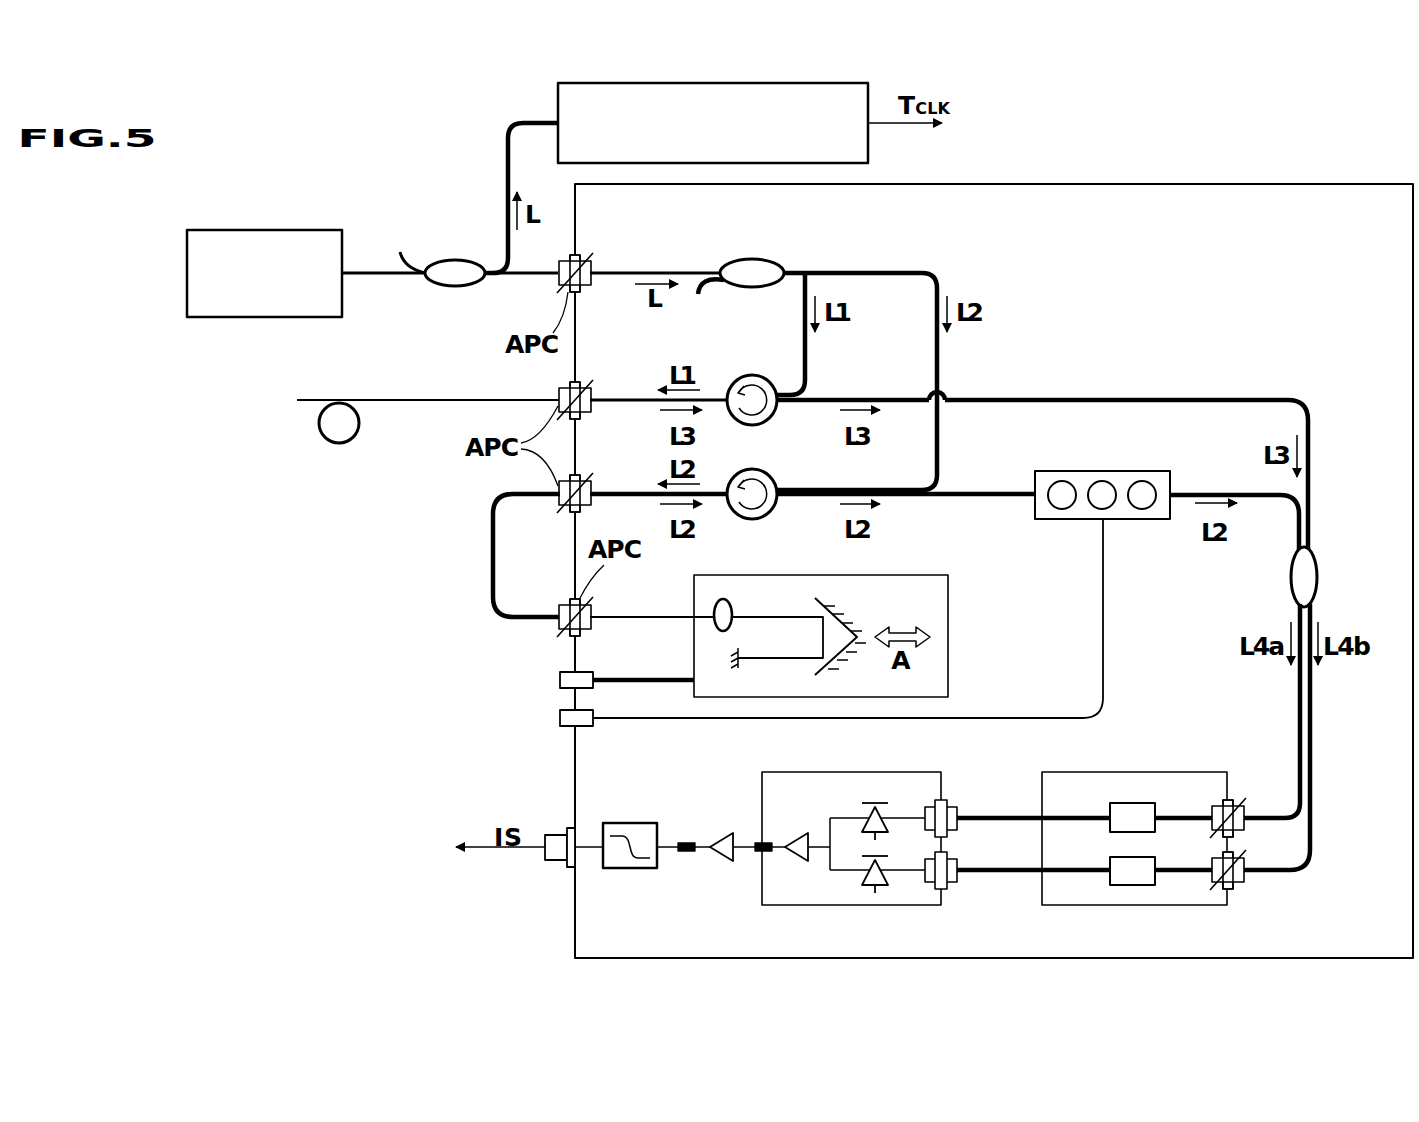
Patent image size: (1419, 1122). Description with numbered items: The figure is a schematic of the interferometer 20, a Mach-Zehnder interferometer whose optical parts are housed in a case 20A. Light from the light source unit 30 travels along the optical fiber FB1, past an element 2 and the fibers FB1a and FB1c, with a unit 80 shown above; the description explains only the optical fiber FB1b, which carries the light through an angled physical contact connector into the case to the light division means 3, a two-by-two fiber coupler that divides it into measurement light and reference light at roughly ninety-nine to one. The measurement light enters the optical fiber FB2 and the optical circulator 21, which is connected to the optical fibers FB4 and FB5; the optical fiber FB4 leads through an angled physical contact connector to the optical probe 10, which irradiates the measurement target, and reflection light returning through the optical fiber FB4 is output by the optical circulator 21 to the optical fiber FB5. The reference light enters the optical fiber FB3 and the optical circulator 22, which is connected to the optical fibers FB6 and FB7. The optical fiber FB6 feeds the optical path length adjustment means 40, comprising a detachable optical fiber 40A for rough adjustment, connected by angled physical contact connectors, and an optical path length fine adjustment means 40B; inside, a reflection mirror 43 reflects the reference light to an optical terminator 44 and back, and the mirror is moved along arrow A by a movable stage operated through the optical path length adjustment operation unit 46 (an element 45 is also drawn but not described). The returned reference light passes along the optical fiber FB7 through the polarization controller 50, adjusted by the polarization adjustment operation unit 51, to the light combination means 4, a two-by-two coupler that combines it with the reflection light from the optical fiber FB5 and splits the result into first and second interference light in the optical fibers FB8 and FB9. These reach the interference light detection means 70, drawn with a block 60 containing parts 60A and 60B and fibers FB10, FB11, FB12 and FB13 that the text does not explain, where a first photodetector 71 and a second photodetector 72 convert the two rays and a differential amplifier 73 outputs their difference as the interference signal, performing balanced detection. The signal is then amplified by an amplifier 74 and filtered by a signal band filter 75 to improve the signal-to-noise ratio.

The lens 2 is at (453, 259).
The light division means 3 is at (751, 258).
The light combination means 4 is at (1291, 575).
The optical probe 10 is at (403, 406).
The interferometer 20 is at (1374, 168).
The case 20A is at (1293, 183).
The optical circulator 21 is at (752, 375).
The optical circulator 22 is at (763, 470).
The light source unit 30 is at (262, 229).
The optical path length adjustment means 40 is at (542, 626).
The optical fiber for roughly adjusting optical path length 40A is at (492, 550).
The optical path length fine adjustment means 40B is at (949, 635).
The reflection mirror 43 is at (838, 606).
The optical terminator 44 is at (742, 666).
The lens 45 is at (720, 599).
The optical path length adjustment operation unit 46 is at (560, 680).
The polarization controller 50 is at (1100, 471).
The polarization adjustment operation unit 51 is at (560, 720).
The optical receiver unit 60 is at (1042, 890).
The optical filter 60A is at (1130, 802).
The optical filter 60B is at (1131, 886).
The interference light detection means 70 is at (942, 779).
The first photodetector 71 is at (875, 802).
The second photodetector 72 is at (877, 894).
The differential amplifier 73 is at (795, 834).
The amplifier 74 is at (715, 834).
The signal band filter 75 is at (626, 823).
The periodic clock generation means 80 is at (558, 96).
The optical fiber FB1 is at (376, 268).
The optical fiber FB1a is at (515, 279).
The optical fiber FB1b is at (652, 268).
The optical fiber FB1c is at (505, 154).
The optical fiber FB2 is at (808, 347).
The optical fiber FB3 is at (940, 347).
The optical fiber FB4 is at (626, 398).
The optical fiber FB5 is at (1143, 399).
The optical fiber FB6 is at (626, 491).
The optical fiber FB7 is at (996, 490).
The optical fiber FB8 is at (1299, 691).
The optical fiber FB9 is at (1313, 691).
The optical fiber FB10 is at (1191, 815).
The optical fiber FB11 is at (1195, 874).
The optical fiber FB12 is at (1059, 815).
The optical fiber FB13 is at (1062, 874).